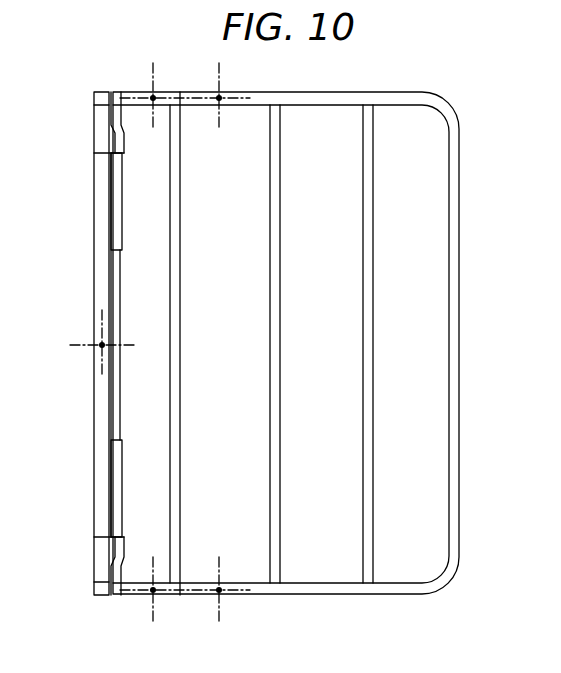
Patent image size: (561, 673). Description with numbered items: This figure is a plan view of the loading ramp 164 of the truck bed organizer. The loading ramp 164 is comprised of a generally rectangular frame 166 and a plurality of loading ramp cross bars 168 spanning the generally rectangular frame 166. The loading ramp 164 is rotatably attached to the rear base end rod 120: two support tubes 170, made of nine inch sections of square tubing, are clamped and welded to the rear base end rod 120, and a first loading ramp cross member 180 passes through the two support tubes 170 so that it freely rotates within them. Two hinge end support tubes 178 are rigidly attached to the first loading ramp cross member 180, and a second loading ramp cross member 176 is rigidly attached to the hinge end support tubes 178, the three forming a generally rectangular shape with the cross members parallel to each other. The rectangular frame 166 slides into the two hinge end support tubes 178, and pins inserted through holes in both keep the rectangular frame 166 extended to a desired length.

The rear base end rod 120 is at (93, 467).
The loading ramp 164 is at (203, 605).
The generally rectangular frame 166 is at (375, 595).
The loading ramp cross bars 168 is at (280, 425).
The support tubes 170 is at (122, 209).
The second loading ramp cross member 176 is at (180, 252).
The hinge end support tubes 178 is at (132, 92).
The first loading ramp cross member 180 is at (120, 410).